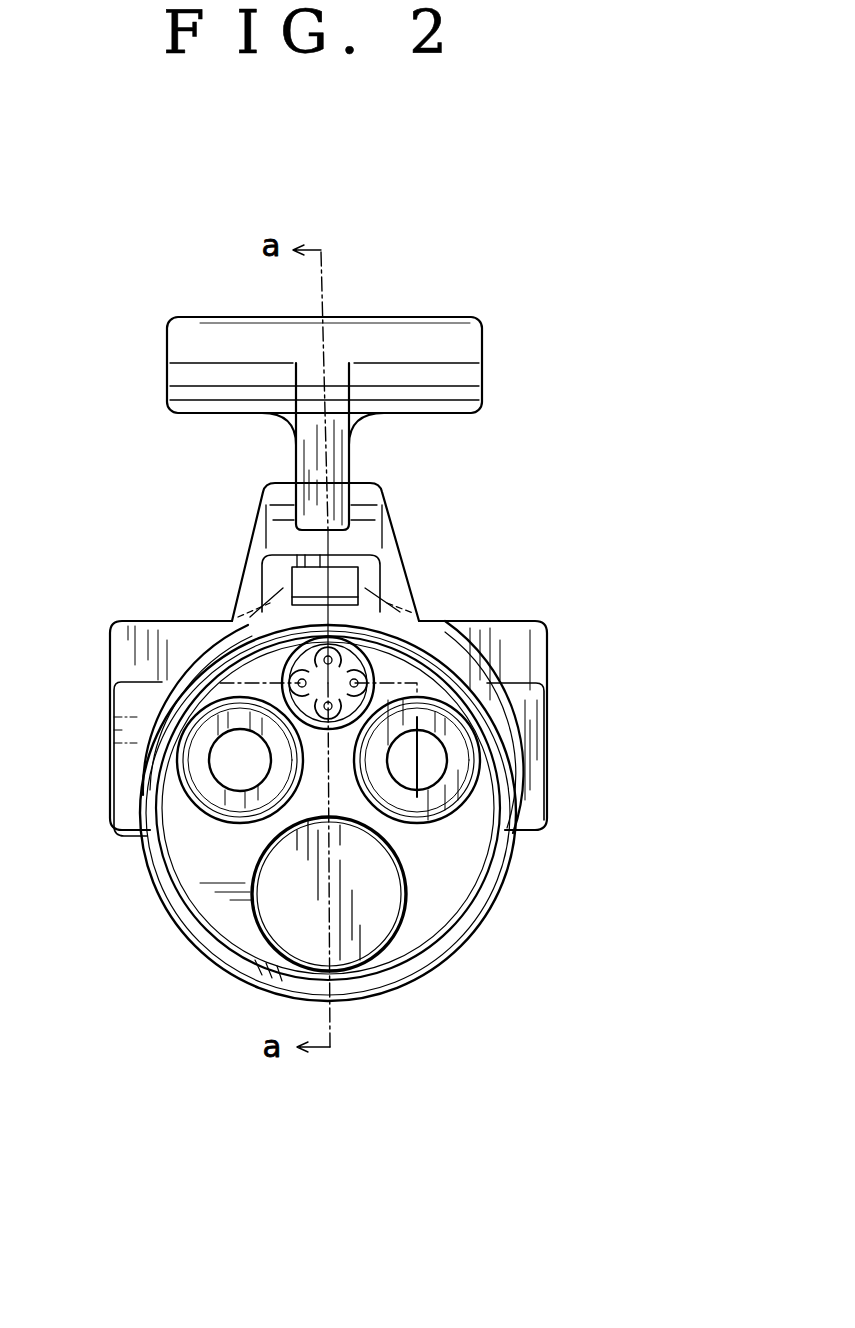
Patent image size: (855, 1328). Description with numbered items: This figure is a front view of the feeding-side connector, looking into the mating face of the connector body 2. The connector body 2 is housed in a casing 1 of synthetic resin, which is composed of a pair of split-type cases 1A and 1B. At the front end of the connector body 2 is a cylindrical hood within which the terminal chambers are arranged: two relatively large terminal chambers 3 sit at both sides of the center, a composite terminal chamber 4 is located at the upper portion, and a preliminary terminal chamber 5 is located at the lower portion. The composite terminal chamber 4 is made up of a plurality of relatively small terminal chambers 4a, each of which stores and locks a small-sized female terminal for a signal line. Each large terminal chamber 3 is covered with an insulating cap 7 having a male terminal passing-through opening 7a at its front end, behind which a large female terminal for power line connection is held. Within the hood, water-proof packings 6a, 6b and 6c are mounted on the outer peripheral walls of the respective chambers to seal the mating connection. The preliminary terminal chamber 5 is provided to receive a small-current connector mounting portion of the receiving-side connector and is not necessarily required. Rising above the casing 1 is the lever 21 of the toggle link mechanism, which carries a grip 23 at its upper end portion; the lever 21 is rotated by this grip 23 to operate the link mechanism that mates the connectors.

The casing 1 is at (328, 834).
The split-type case 1A is at (455, 868).
The split-type case 1B is at (263, 982).
The connector body 2 is at (440, 905).
The large terminal chamber 3 is at (458, 744).
The composite terminal chamber 4 is at (436, 635).
The small terminal chamber 4a is at (293, 662).
The preliminary terminal chamber 5 is at (280, 912).
The water-proof packing 6a is at (477, 803).
The water-proof packing 6b is at (376, 661).
The water-proof packing 6c is at (410, 880).
The insulating cap 7 is at (160, 800).
The male terminal passing-through opening 7a is at (226, 767).
The lever 21 is at (337, 453).
The grip 23 is at (423, 336).